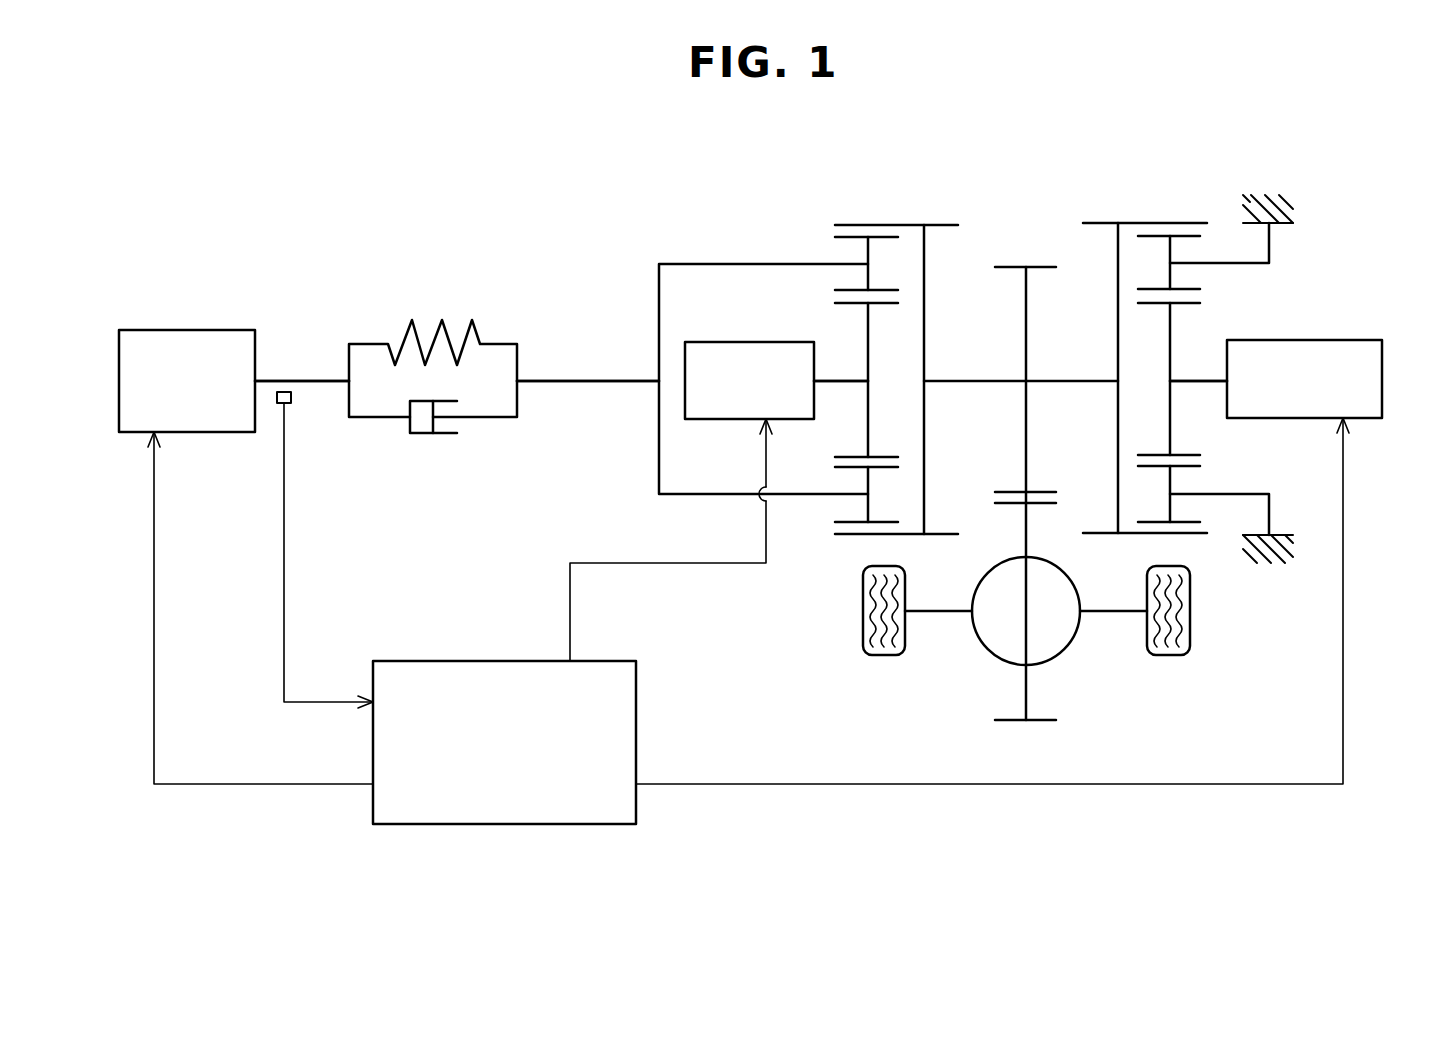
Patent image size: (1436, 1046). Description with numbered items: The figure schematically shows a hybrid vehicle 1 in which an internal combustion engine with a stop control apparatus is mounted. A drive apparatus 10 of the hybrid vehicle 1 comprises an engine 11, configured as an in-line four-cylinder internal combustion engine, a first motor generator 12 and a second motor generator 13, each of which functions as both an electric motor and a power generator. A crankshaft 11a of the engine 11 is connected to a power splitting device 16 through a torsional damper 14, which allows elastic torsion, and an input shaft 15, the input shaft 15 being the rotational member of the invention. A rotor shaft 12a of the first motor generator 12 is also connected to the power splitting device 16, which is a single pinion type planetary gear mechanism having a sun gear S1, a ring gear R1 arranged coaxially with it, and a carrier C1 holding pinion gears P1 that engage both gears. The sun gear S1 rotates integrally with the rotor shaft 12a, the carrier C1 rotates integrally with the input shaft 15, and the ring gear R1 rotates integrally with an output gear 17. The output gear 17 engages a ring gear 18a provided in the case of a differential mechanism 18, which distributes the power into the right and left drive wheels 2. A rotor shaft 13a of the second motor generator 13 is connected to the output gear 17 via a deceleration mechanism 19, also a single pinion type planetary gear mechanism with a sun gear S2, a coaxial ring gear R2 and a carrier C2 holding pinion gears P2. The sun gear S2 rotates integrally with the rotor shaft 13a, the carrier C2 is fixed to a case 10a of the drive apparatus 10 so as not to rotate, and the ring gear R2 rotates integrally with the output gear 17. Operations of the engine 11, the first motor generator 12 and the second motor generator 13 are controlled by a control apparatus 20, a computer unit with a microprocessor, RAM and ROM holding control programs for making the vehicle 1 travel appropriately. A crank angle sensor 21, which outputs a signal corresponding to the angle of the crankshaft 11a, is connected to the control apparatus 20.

The hybrid vehicle 1 is at (288, 170).
The drive wheels 2 is at (888, 656).
The drive apparatus 10 is at (652, 168).
The case 10a is at (1293, 213).
The internal combustion engine 11 is at (190, 330).
The crankshaft 11a is at (303, 378).
The first motor generator 12 is at (746, 342).
The rotor shaft of the first motor generator 12a is at (840, 378).
The second motor generator 13 is at (1383, 378).
The rotor shaft of the second motor generator 13a is at (1198, 382).
The torsional damper 14 is at (430, 312).
The input shaft 15 is at (577, 380).
The power splitting device 16 is at (947, 180).
The output gear 17 is at (1028, 455).
The differential mechanism 18 is at (1065, 648).
The ring gear of the differential mechanism 18a is at (1042, 722).
The deceleration mechanism 19 is at (1143, 182).
The control apparatus 20 is at (500, 826).
The crank angle sensor 21 is at (292, 398).
The carrier C1 is at (707, 263).
The carrier C2 is at (1271, 237).
The pinion gears P1 is at (867, 243).
The pinion gears P2 is at (1172, 250).
The ring gear R1 is at (875, 225).
The ring gear R2 is at (1172, 222).
The sun gear S1 is at (887, 303).
The sun gear S2 is at (1172, 325).